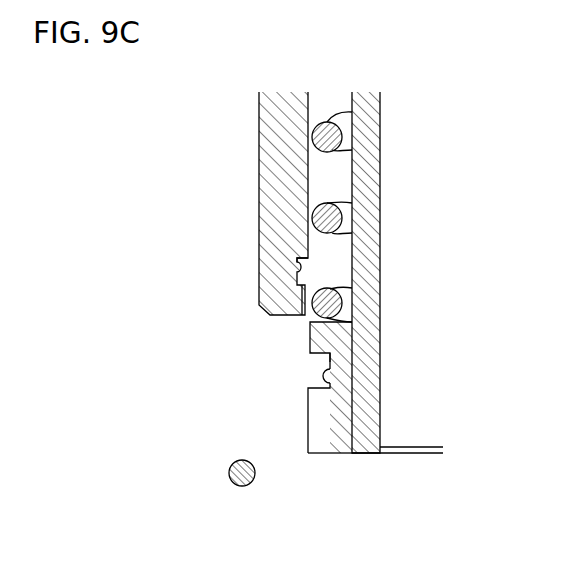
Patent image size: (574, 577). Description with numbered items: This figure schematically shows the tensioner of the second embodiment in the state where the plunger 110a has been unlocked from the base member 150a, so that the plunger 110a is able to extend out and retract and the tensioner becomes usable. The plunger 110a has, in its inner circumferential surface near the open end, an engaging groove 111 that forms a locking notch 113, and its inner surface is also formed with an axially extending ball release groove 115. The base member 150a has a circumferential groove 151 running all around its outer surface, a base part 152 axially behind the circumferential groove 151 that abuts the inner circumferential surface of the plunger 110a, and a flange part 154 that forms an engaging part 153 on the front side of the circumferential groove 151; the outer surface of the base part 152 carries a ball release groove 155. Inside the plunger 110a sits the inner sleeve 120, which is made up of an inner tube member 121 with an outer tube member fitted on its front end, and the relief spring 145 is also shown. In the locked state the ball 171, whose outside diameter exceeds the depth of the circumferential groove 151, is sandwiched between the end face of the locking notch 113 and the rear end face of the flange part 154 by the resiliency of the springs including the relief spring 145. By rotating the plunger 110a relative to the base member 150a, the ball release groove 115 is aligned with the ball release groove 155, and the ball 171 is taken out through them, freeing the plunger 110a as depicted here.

The plunger 110a is at (256, 100).
The relief spring 145 is at (327, 137).
The inner sleeve 120 is at (350, 188).
The engaging groove 111 is at (297, 284).
The ball release groove 115 is at (302, 303).
The locking notch 113 is at (314, 283).
The engaging part 153 is at (308, 334).
The flange part 154 is at (330, 350).
The circumferential groove 151 is at (330, 384).
The base part 152 is at (308, 429).
The ball release groove 155 is at (320, 455).
The base member 150a is at (336, 458).
The inner tube member 121 is at (381, 455).
The ball 171 is at (233, 484).